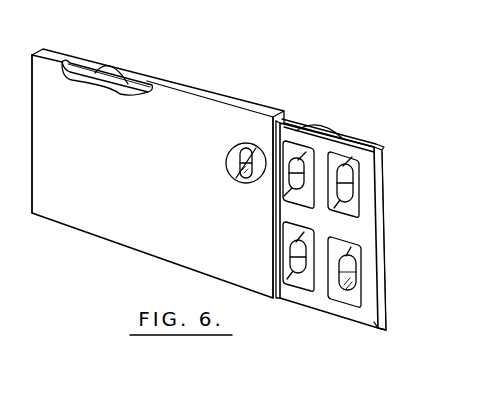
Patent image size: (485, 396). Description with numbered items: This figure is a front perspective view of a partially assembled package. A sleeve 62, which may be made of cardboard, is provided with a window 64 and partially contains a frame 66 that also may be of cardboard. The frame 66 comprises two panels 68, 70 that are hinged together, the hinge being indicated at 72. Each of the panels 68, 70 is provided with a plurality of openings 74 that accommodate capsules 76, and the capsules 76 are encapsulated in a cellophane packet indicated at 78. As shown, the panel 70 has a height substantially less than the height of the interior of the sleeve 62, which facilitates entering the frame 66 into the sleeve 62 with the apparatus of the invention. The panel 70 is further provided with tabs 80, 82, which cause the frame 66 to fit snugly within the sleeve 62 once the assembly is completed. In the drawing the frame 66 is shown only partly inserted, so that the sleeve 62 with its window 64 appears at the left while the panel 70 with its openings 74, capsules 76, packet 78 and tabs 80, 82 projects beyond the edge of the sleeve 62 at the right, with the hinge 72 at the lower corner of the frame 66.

The sleeve 62 is at (190, 106).
The window 64 is at (227, 166).
The frame 66 is at (323, 323).
The panel 68 is at (367, 229).
The panel 70 is at (379, 146).
The hinge 72 is at (380, 331).
The openings 74 is at (360, 290).
The capsules 76 is at (368, 267).
The cellophane packet 78 is at (340, 256).
The tab 80 is at (322, 132).
The tab 82 is at (117, 70).